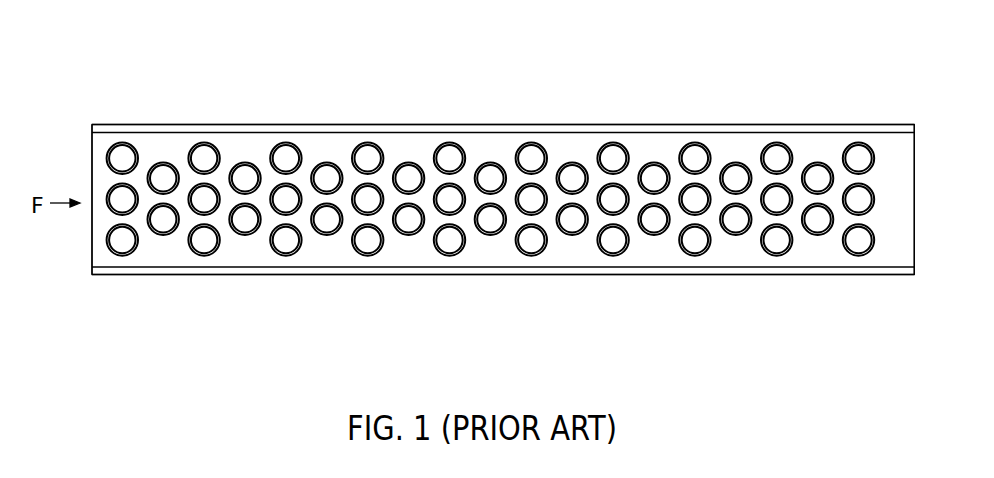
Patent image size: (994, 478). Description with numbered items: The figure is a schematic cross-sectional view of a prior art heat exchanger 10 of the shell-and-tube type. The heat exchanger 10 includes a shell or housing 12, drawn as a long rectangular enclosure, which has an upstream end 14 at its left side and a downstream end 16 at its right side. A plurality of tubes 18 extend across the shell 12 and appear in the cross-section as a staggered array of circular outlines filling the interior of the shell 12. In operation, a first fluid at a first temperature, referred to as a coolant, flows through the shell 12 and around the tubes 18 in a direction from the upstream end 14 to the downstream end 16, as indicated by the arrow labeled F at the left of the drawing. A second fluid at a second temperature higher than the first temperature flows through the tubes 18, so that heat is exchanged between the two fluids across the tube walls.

The heat exchanger 10 is at (465, 54).
The shell 12 is at (613, 129).
The upstream end 14 is at (102, 288).
The downstream end 16 is at (904, 287).
The tubes 18 is at (530, 256).